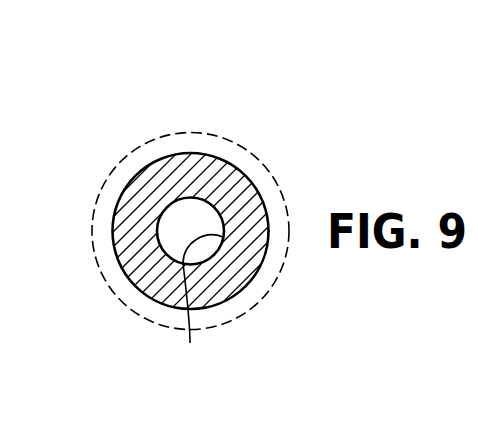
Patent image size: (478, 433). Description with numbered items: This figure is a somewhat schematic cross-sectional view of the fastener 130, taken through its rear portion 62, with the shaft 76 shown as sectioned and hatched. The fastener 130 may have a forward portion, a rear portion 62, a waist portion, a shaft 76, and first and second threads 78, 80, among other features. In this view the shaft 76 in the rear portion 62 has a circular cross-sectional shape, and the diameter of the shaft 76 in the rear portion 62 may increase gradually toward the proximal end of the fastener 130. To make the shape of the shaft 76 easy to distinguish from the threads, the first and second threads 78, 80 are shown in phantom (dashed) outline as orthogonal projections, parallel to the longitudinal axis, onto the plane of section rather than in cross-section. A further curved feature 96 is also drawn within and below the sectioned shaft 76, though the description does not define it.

The rear portion 62 is at (90, 167).
The shaft 76 is at (114, 234).
The first thread 78 is at (258, 157).
The second thread 80 is at (122, 160).
The crack / heating element 96 is at (201, 303).
The fastener 130 is at (218, 107).